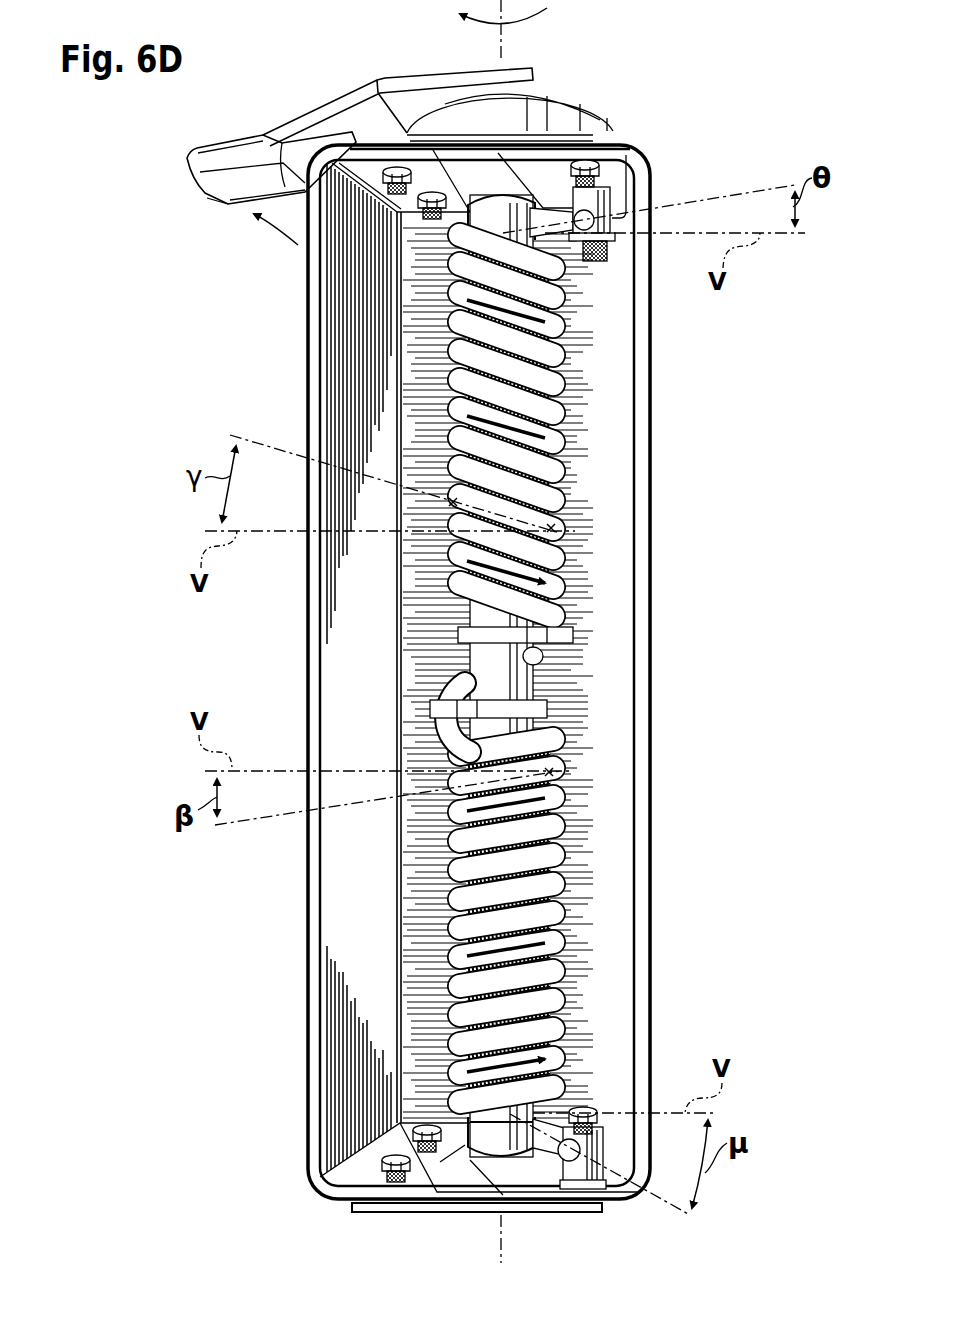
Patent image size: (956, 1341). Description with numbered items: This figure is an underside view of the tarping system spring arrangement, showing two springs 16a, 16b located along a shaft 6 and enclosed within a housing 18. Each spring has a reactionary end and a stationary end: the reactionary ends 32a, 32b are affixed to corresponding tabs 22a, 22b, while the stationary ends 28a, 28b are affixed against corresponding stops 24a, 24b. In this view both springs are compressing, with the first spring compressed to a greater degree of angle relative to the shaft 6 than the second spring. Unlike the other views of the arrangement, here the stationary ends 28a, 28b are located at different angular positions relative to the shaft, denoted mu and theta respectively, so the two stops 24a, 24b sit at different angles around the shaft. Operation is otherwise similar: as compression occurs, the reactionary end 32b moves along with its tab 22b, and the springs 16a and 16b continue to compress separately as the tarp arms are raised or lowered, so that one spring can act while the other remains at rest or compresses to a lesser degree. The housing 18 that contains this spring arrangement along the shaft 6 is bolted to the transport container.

The shaft 6 is at (507, 678).
The spring 16a is at (460, 967).
The spring 16b is at (457, 442).
The housing 18 is at (650, 995).
The tab 22a is at (430, 708).
The tab 22b is at (560, 635).
The stop 24a is at (598, 1172).
The stop 24b is at (603, 202).
The stationary end 28a is at (550, 1148).
The stationary end 28b is at (548, 217).
The reactionary end 32a is at (523, 656).
The reactionary end 32b is at (458, 680).